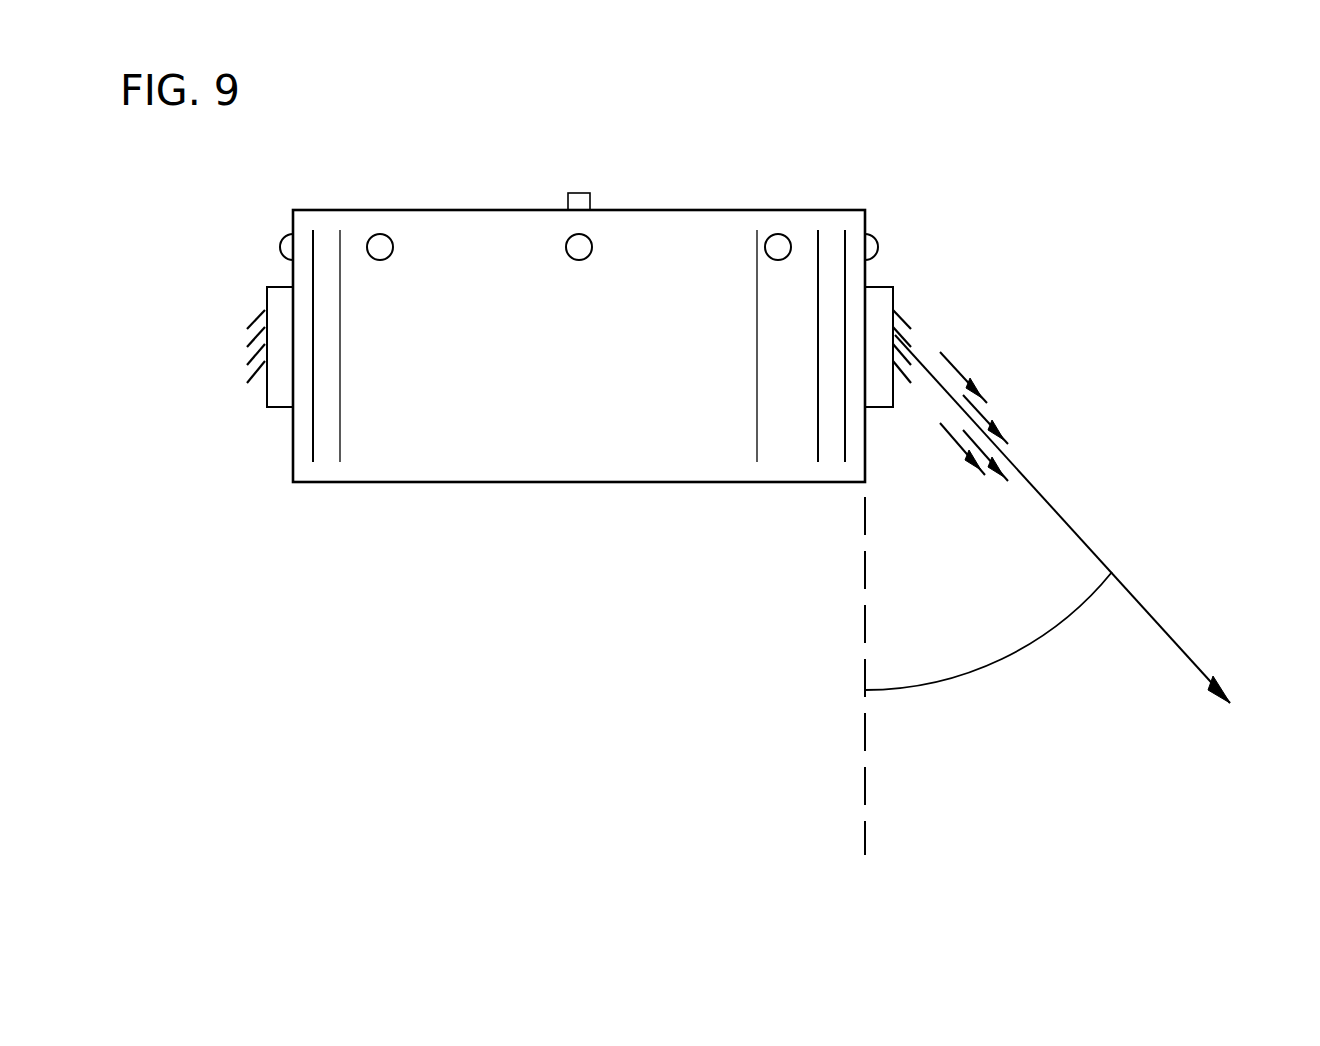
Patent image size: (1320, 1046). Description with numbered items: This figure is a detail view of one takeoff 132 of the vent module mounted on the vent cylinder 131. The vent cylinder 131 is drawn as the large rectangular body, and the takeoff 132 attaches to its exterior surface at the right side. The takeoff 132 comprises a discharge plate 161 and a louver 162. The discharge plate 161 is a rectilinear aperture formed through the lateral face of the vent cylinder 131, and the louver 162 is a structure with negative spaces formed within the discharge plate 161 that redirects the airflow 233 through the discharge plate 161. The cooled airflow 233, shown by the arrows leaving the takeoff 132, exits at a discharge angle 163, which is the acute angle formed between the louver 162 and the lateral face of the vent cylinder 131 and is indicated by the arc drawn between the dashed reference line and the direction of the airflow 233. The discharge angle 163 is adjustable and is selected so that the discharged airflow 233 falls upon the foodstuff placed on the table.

The vent cylinder 131 is at (637, 243).
The takeoff 132 is at (865, 357).
The discharge plate 161 is at (893, 287).
The louver 162 is at (902, 316).
The discharge angle 163 is at (988, 668).
The airflow 233 is at (1172, 635).